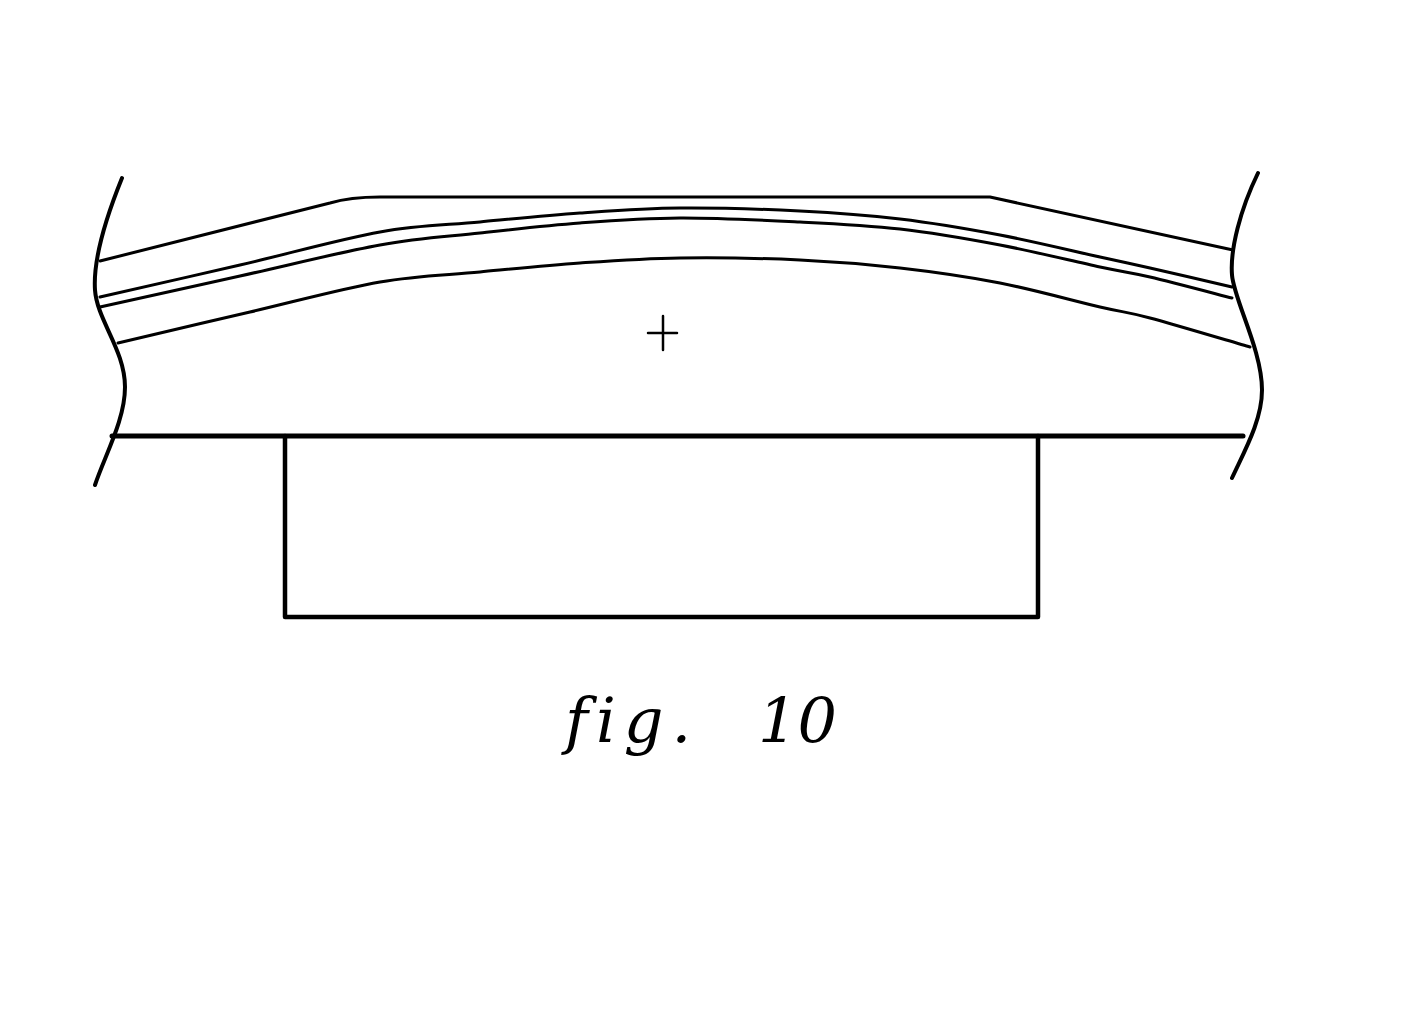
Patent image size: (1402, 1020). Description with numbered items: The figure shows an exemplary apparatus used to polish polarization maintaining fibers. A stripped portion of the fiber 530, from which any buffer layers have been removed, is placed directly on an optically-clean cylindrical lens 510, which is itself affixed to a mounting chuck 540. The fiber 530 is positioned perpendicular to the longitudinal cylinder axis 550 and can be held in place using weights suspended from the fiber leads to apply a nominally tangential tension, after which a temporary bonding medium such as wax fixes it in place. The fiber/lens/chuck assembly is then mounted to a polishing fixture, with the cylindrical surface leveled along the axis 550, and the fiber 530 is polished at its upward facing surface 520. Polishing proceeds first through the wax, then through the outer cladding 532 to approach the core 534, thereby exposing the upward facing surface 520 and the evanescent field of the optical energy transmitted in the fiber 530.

The cylindrical lens 510 is at (217, 408).
The upward facing surface 520 is at (676, 199).
The fiber 530 is at (1105, 228).
The outer cladding 532 is at (1223, 245).
The core 534 is at (1223, 275).
The mounting chuck 540 is at (995, 518).
The longitudinal cylinder axis 550 is at (658, 334).